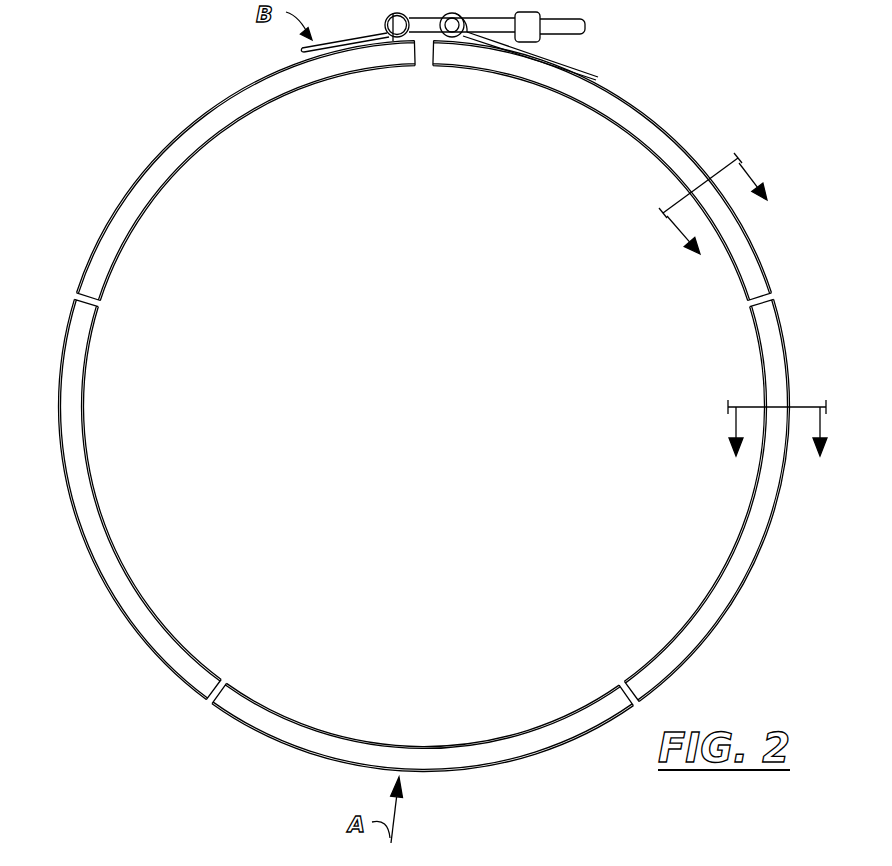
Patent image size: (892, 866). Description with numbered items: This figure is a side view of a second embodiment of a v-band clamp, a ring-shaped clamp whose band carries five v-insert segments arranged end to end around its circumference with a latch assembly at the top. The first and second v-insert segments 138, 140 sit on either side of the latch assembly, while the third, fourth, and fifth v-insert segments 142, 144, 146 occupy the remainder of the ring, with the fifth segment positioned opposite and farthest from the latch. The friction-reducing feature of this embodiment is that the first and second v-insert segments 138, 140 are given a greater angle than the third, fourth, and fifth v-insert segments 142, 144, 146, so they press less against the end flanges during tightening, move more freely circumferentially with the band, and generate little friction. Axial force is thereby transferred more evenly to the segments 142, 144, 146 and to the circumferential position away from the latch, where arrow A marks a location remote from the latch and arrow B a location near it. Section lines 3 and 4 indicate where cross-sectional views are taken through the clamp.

The first v-insert segment 138 is at (594, 125).
The second v-insert segment 140 is at (197, 166).
The third v-insert segment 142 is at (746, 354).
The fourth v-insert segment 144 is at (130, 543).
The fifth v-insert segment 146 is at (373, 727).
The section line 3- 3 is at (778, 448).
The section line 4- 4 is at (723, 218).